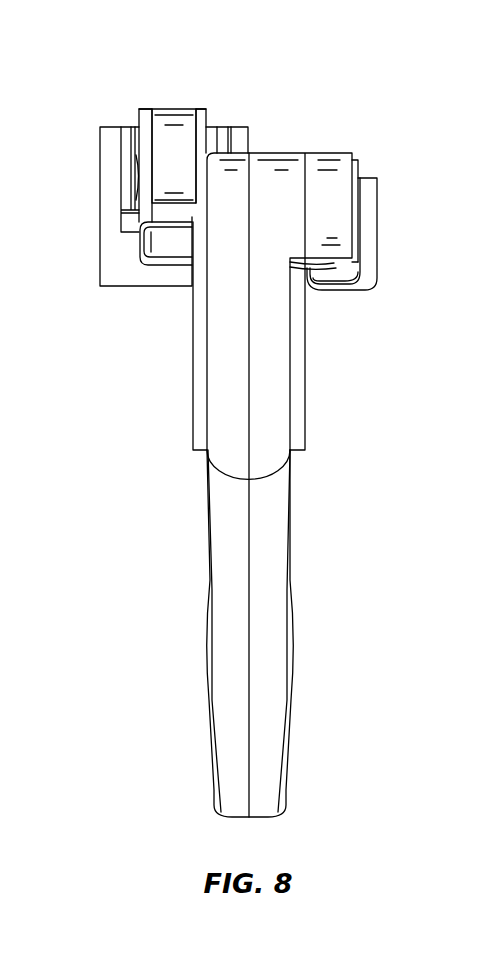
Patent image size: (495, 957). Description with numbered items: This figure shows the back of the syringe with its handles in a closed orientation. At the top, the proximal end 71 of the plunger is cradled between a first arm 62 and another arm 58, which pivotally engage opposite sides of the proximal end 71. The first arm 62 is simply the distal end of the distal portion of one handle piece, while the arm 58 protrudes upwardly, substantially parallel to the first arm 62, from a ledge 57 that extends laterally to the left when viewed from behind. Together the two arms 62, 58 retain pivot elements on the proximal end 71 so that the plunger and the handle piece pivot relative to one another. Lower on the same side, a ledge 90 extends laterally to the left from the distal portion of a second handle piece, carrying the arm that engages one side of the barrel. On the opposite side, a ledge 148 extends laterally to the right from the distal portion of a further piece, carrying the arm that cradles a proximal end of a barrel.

The ledge 57 is at (170, 213).
The arm 58 is at (202, 108).
The first arm 62 is at (145, 108).
The proximal end of plunger 71 is at (173, 120).
The ledge 90 is at (118, 270).
The ledge 148 is at (343, 272).